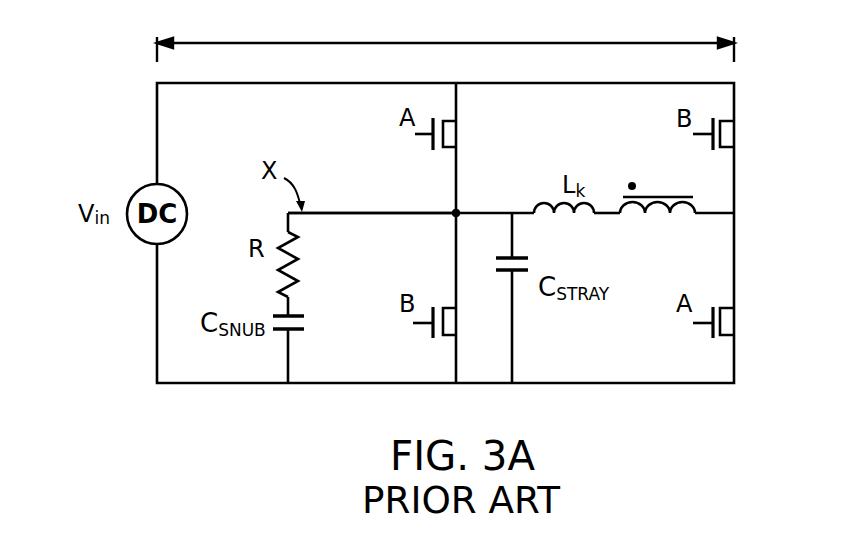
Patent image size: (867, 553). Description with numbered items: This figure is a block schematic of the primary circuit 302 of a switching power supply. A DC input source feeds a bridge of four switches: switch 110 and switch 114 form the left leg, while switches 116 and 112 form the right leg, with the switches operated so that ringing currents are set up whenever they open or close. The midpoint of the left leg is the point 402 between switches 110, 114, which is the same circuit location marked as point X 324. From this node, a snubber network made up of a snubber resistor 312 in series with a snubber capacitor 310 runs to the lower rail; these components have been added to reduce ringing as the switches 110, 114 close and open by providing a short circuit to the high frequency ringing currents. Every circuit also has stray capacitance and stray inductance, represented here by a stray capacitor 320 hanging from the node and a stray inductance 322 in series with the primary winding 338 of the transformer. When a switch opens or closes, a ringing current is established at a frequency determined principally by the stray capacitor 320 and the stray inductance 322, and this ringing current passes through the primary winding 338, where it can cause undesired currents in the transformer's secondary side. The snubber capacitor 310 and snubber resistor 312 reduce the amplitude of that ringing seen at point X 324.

The primary circuit 302 is at (466, 30).
The switch 110 is at (448, 136).
The switch B (upper right transistor) 116 is at (737, 136).
The switch 114 is at (443, 338).
The switch A (lower right transistor) 112 is at (737, 325).
The point 402 is at (454, 212).
The point X 324 is at (339, 212).
The snubber resistor 312 is at (300, 254).
The snubber capacitor 310 is at (303, 316).
The stray capacitor 320 is at (518, 258).
The stray inductance 322 is at (591, 215).
The primary winding 338 is at (665, 216).